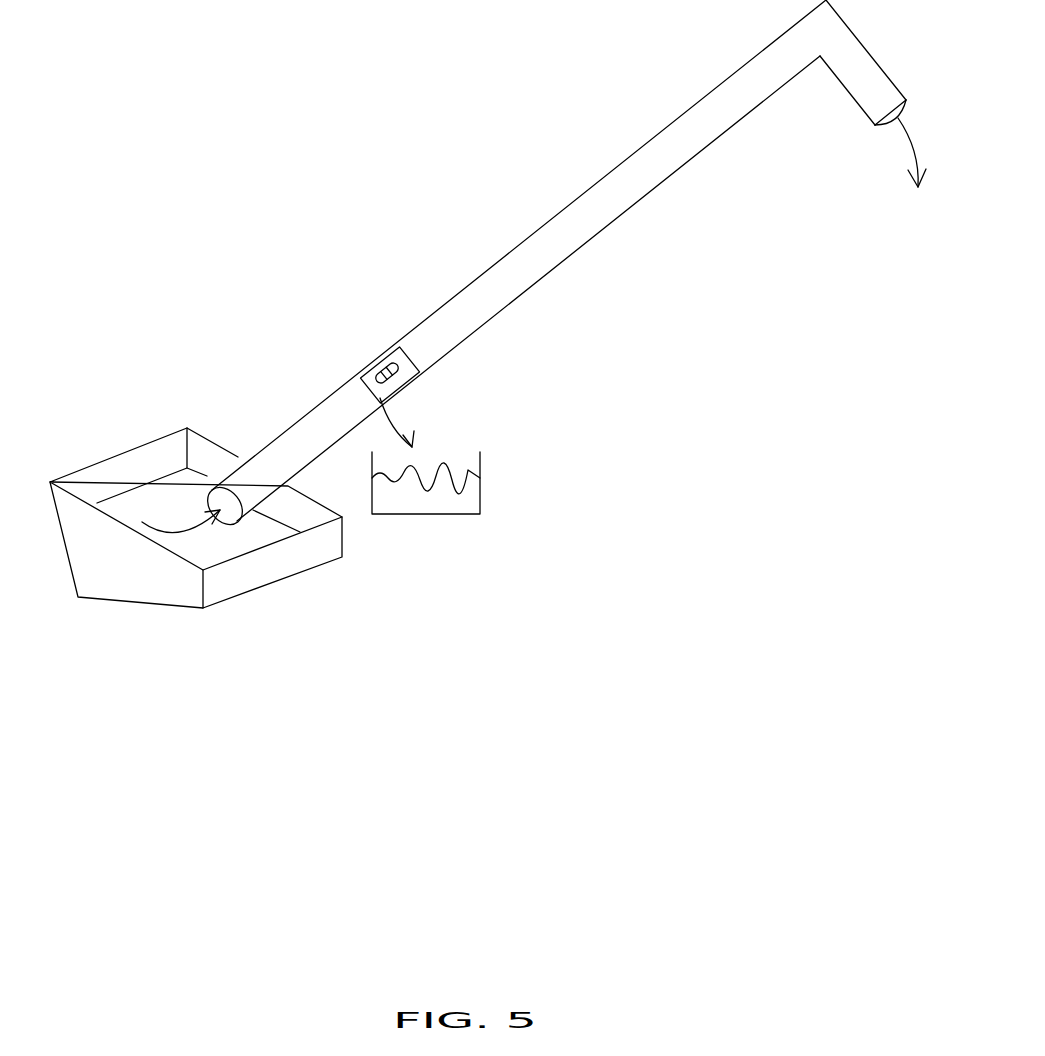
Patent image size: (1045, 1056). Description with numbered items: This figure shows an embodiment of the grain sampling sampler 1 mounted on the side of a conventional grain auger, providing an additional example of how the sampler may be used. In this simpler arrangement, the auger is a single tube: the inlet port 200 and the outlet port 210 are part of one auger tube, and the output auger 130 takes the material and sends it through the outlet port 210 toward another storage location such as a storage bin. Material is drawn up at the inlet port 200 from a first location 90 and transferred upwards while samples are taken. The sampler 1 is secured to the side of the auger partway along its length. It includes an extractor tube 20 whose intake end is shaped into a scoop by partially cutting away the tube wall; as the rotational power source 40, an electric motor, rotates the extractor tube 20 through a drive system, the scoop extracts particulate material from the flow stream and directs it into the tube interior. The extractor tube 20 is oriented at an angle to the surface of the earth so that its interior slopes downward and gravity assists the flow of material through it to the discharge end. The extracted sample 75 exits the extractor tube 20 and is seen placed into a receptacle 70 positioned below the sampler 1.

The sampler 1 is at (441, 370).
The extractor tube 20 is at (389, 390).
The rotational power source 40 is at (397, 373).
The receptacle 70 is at (425, 515).
The sample 75 is at (467, 495).
The first location 90 is at (162, 608).
The output auger 130 is at (612, 222).
The inlet port 200 is at (155, 532).
The outlet port 210 is at (918, 171).